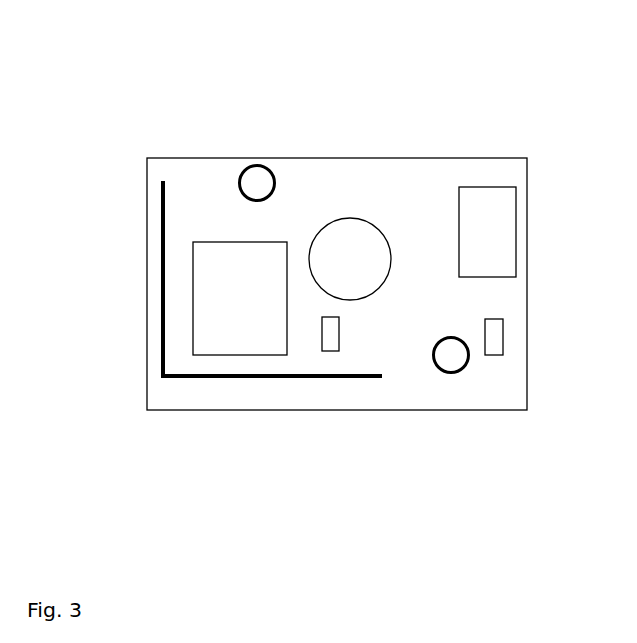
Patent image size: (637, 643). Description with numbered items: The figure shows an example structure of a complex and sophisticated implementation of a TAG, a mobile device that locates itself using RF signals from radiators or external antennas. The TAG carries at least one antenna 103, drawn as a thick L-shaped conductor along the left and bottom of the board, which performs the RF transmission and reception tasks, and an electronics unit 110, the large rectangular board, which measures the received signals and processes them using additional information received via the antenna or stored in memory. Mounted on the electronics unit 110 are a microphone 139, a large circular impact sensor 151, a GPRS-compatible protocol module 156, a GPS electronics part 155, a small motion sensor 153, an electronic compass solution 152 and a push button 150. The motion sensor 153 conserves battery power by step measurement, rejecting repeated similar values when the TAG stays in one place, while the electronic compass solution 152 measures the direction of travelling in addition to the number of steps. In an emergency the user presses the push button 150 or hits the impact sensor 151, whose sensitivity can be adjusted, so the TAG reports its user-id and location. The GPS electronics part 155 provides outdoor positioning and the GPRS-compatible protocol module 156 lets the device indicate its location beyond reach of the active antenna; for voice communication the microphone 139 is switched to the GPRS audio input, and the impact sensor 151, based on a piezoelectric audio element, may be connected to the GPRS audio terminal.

The electronics unit 110 is at (416, 183).
The antenna 103 is at (163, 383).
The GPRS-compatible protocol module 156 is at (228, 282).
The microphone 139 is at (248, 165).
The impact sensor 151 is at (356, 270).
The GPS electronics part 155 is at (475, 237).
The motion sensor 153 is at (327, 343).
The electronic compass solution 152 is at (497, 338).
The push button 150 is at (457, 357).